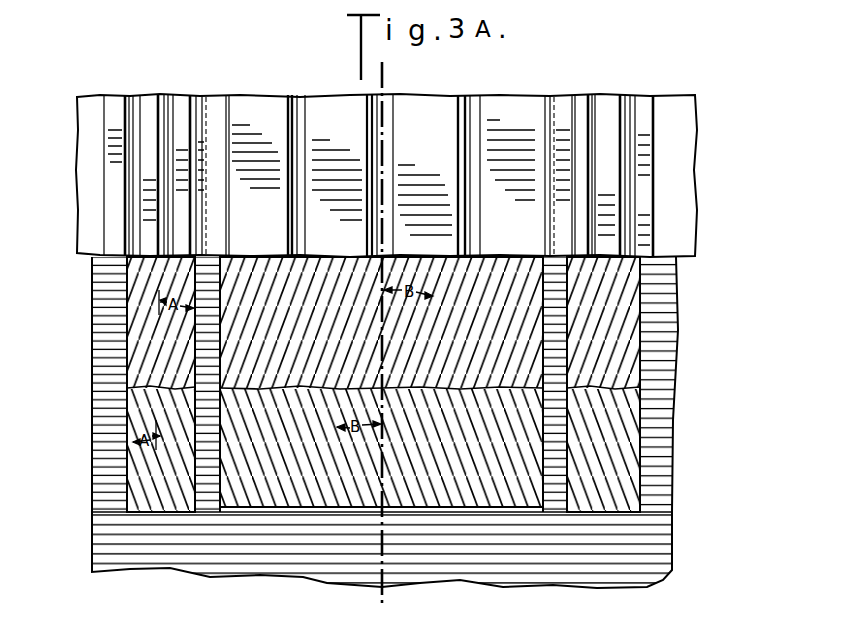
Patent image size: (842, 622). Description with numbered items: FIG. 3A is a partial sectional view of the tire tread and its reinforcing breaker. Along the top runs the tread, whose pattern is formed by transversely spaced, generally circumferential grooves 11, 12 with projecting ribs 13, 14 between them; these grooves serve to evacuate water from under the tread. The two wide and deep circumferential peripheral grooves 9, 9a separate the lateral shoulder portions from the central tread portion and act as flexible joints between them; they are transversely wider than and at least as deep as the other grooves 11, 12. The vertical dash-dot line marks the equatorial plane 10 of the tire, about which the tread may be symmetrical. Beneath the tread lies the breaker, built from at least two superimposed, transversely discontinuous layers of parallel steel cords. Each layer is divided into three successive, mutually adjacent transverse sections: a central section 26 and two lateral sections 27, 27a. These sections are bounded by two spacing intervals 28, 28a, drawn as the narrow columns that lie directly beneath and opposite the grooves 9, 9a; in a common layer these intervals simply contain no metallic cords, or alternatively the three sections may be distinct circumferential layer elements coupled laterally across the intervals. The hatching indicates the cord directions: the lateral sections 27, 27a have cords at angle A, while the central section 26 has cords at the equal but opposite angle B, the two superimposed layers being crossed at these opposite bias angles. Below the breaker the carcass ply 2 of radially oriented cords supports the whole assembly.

The carcass ply 2 is at (98, 312).
The circumferential peripheral groove 9 is at (216, 98).
The circumferential peripheral groove 9a is at (552, 100).
The equatorial plane 10 is at (384, 78).
The groove 11 is at (475, 96).
The groove 12 is at (627, 97).
The projecting rib 13 is at (518, 96).
The projecting rib 14 is at (645, 95).
The central section 26 is at (528, 368).
The lateral section 27 is at (142, 367).
The lateral section 27a is at (522, 400).
The spacing interval 28 is at (209, 268).
The spacing interval 28a is at (558, 275).